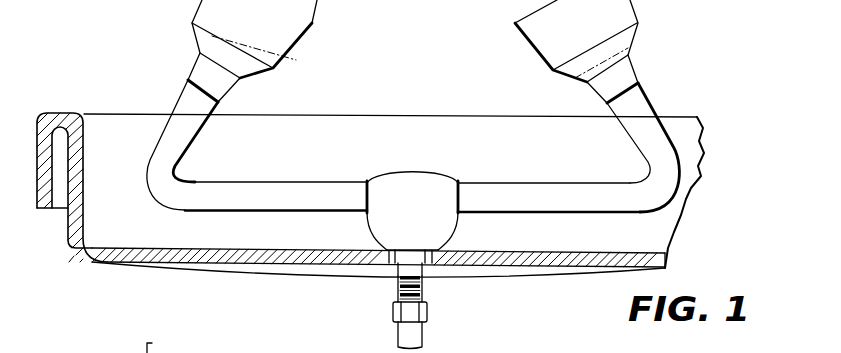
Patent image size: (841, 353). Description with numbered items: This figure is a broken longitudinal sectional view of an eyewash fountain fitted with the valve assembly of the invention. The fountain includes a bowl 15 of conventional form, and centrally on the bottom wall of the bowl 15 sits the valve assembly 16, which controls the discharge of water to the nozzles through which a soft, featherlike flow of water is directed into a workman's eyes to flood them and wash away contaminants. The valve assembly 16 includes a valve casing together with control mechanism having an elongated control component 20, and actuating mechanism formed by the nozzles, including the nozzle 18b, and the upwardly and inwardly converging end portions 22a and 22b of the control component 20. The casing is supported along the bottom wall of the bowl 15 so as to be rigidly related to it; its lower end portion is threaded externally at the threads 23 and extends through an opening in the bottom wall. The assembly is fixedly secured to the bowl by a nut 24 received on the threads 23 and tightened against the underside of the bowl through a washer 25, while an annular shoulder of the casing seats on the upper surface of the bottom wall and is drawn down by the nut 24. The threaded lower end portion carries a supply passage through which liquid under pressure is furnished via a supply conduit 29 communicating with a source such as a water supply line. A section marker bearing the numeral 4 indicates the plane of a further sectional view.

The bowl 15 is at (84, 90).
The valve assembly 16 is at (434, 168).
The nozzle 18b is at (532, 43).
The control component 20 is at (306, 181).
The end portion 22a is at (191, 138).
The end portion 22b is at (644, 157).
The threads 23 is at (423, 294).
The nut 24 is at (397, 274).
The washer 25 is at (398, 273).
The supply conduit 29 is at (417, 337).
The section line 4 is at (187, 345).